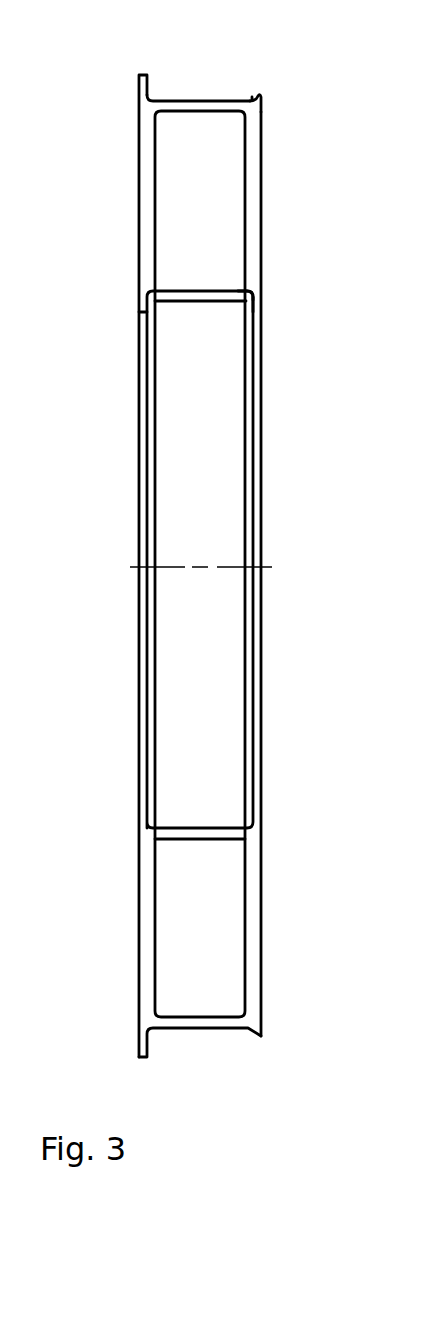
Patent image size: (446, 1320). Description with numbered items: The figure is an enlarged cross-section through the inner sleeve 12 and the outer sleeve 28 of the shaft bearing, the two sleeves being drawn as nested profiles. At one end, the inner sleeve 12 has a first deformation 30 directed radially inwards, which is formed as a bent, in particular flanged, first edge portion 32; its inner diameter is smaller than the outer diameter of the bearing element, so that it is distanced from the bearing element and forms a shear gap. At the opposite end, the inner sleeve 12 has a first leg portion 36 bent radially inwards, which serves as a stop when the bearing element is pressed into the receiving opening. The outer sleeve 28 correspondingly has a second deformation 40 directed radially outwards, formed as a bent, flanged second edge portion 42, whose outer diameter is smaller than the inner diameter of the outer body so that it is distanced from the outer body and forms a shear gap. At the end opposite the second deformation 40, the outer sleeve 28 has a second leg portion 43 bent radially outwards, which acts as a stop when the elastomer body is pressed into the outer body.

The inner sleeve 12 is at (199, 290).
The outer sleeve 28 is at (222, 103).
The first deformation 30 is at (258, 297).
The first edge portion 32 is at (253, 291).
The first leg portion 36 is at (139, 313).
The second deformation 40 is at (262, 98).
The second edge portion 42 is at (262, 104).
The second leg portion 43 is at (138, 91).